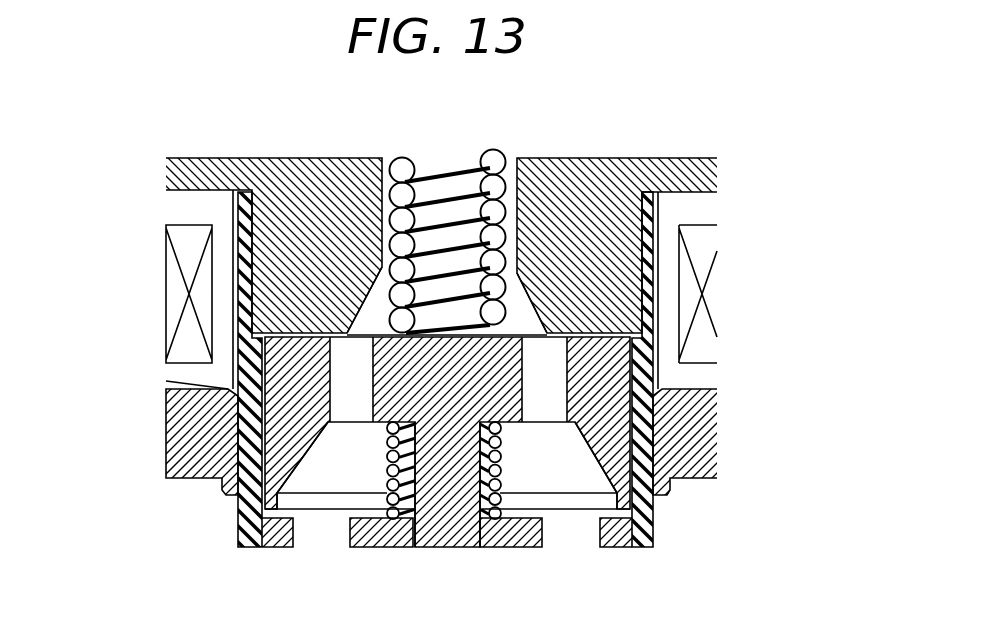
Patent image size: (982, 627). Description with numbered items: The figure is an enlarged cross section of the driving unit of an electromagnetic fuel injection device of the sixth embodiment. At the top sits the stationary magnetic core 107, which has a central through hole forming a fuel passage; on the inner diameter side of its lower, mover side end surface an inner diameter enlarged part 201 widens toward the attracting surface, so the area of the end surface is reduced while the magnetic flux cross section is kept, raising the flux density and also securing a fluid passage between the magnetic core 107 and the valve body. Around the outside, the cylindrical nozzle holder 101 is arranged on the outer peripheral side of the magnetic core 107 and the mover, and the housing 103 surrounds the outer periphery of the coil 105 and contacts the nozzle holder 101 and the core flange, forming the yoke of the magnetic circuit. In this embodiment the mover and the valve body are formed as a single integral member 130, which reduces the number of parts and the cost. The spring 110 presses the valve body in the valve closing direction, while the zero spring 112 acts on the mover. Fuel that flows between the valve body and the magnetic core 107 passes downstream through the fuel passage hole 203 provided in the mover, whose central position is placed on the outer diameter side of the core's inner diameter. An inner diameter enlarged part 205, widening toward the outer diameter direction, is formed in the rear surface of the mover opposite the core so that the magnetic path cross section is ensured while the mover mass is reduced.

The nozzle holder 101 is at (238, 518).
The housing 103 is at (182, 433).
The coil 105 is at (183, 350).
The magnetic core 107 is at (293, 193).
The spring 110 is at (495, 208).
The zero spring 112 is at (503, 515).
The integral member 130 is at (437, 513).
The inner diameter enlarged part 201 is at (368, 282).
The fuel passage hole 203 is at (542, 368).
The inner diameter enlarged part 205 is at (592, 462).